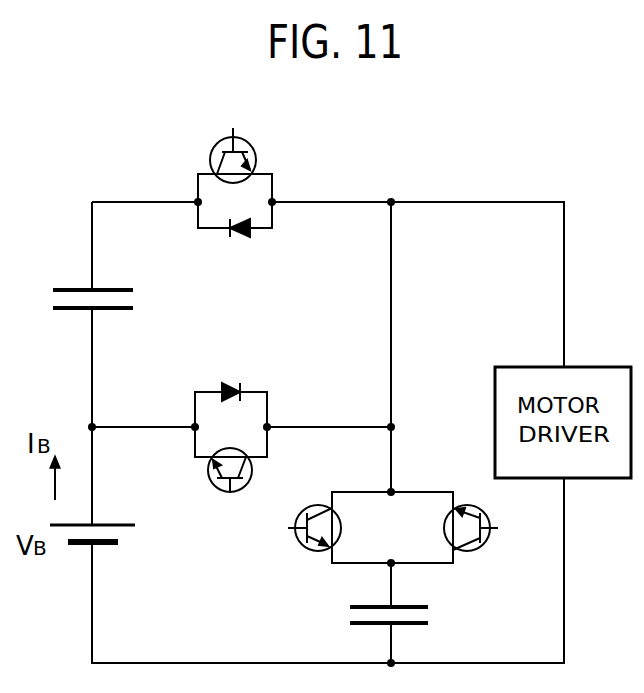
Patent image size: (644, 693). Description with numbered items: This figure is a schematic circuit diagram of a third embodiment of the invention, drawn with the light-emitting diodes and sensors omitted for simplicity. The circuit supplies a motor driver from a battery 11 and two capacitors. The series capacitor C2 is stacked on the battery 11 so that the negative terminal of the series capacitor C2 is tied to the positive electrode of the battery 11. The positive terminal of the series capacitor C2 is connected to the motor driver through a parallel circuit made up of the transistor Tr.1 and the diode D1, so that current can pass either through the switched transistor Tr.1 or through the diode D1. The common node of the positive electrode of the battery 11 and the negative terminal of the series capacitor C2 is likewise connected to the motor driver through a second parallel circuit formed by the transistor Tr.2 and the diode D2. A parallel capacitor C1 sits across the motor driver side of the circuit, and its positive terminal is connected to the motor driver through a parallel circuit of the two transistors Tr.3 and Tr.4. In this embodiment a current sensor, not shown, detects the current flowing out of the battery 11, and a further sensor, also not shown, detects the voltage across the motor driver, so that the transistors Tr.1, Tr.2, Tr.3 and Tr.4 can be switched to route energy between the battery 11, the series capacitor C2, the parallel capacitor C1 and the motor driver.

The battery 11 is at (127, 535).
The transistor Tr.1 is at (235, 152).
The transistor Tr.2 is at (231, 480).
The transistor Tr.3 is at (333, 543).
The transistor Tr.4 is at (465, 527).
The diode D1 is at (235, 239).
The diode D2 is at (231, 386).
The parallel capacitor C1 is at (410, 618).
The series capacitor C2 is at (99, 282).